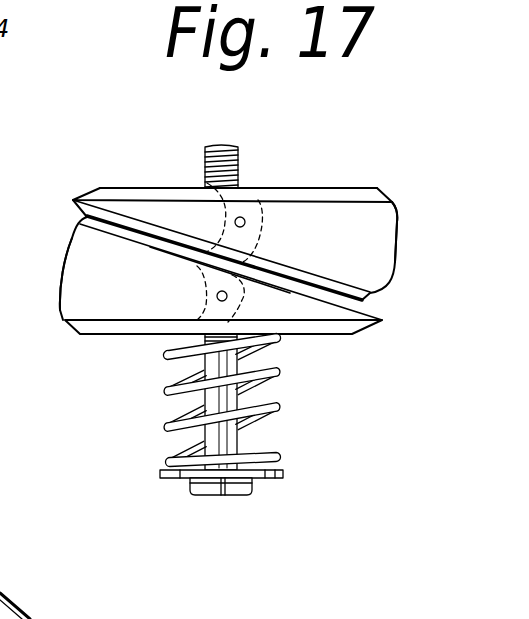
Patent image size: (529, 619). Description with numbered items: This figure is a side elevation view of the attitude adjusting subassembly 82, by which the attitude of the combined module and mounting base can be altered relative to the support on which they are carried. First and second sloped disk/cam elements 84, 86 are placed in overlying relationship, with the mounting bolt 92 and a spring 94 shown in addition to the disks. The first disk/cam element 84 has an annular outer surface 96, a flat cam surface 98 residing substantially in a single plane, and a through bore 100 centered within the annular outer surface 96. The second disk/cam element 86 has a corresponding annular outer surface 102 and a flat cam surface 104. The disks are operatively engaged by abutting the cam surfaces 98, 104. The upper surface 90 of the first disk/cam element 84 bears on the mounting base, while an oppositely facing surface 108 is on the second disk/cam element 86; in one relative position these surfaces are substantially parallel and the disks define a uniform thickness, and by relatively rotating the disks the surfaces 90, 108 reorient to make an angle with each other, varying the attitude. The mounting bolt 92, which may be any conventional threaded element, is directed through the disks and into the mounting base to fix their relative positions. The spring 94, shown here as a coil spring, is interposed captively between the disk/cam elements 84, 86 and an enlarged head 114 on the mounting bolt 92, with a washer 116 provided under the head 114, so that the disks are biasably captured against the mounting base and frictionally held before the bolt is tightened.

The attitude adjusting subassembly 82 is at (0, 147).
The first sloped disk/cam element 84 is at (310, 187).
The second sloped disk/cam element 86 is at (62, 291).
The upper surface 90 is at (152, 187).
The mounting bolt 92 is at (240, 184).
The spring 94 is at (275, 405).
The annular outer surface 96 is at (0, 74).
The cam surface 98 is at (170, 241).
The through bore 100 is at (13, 551).
The annular outer surface 102 is at (62, 258).
The flat cam surface 104 is at (245, 263).
The oppositely facing surface 108 is at (161, 335).
The enlarged head 114 is at (243, 484).
The washer 116 is at (173, 479).